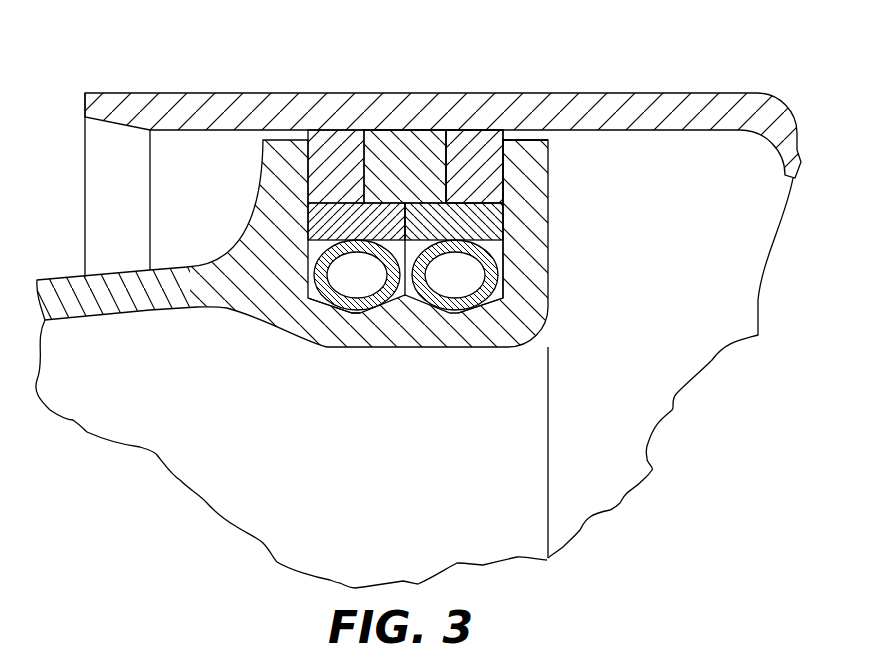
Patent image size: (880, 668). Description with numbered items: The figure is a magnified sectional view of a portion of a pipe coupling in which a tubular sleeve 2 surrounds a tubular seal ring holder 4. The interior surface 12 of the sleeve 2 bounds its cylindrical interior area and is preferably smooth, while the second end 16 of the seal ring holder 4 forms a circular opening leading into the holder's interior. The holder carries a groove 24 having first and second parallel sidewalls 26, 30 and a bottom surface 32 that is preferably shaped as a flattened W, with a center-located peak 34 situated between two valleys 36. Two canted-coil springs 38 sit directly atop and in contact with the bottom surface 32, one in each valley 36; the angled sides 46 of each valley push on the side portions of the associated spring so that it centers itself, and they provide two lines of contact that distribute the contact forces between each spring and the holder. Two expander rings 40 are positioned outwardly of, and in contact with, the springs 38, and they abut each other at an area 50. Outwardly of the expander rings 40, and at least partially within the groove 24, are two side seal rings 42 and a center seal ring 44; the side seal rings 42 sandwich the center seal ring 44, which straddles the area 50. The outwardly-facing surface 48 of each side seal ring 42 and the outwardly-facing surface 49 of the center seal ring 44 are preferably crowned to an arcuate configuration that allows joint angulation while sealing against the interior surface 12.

The tubular sleeve 2 is at (667, 110).
The tubular seal ring holder 4 is at (57, 285).
The interior surface 12 is at (692, 131).
The second end 16 is at (549, 263).
The groove 24 is at (505, 153).
The first sidewall 26 is at (307, 172).
The second sidewall 30 is at (505, 176).
The bottom surface 32 is at (363, 313).
The center-located peak 34 is at (405, 297).
The valley 36 is at (358, 312).
The canted-coil spring 38 is at (389, 279).
The expander ring 40 is at (318, 224).
The side seal ring 42 is at (337, 137).
The center seal ring 44 is at (406, 137).
The angled side 46 is at (490, 300).
The outwardly-facing surface 48 is at (462, 133).
The outwardly-facing surface 49 is at (430, 131).
The abutment area 50 is at (404, 205).